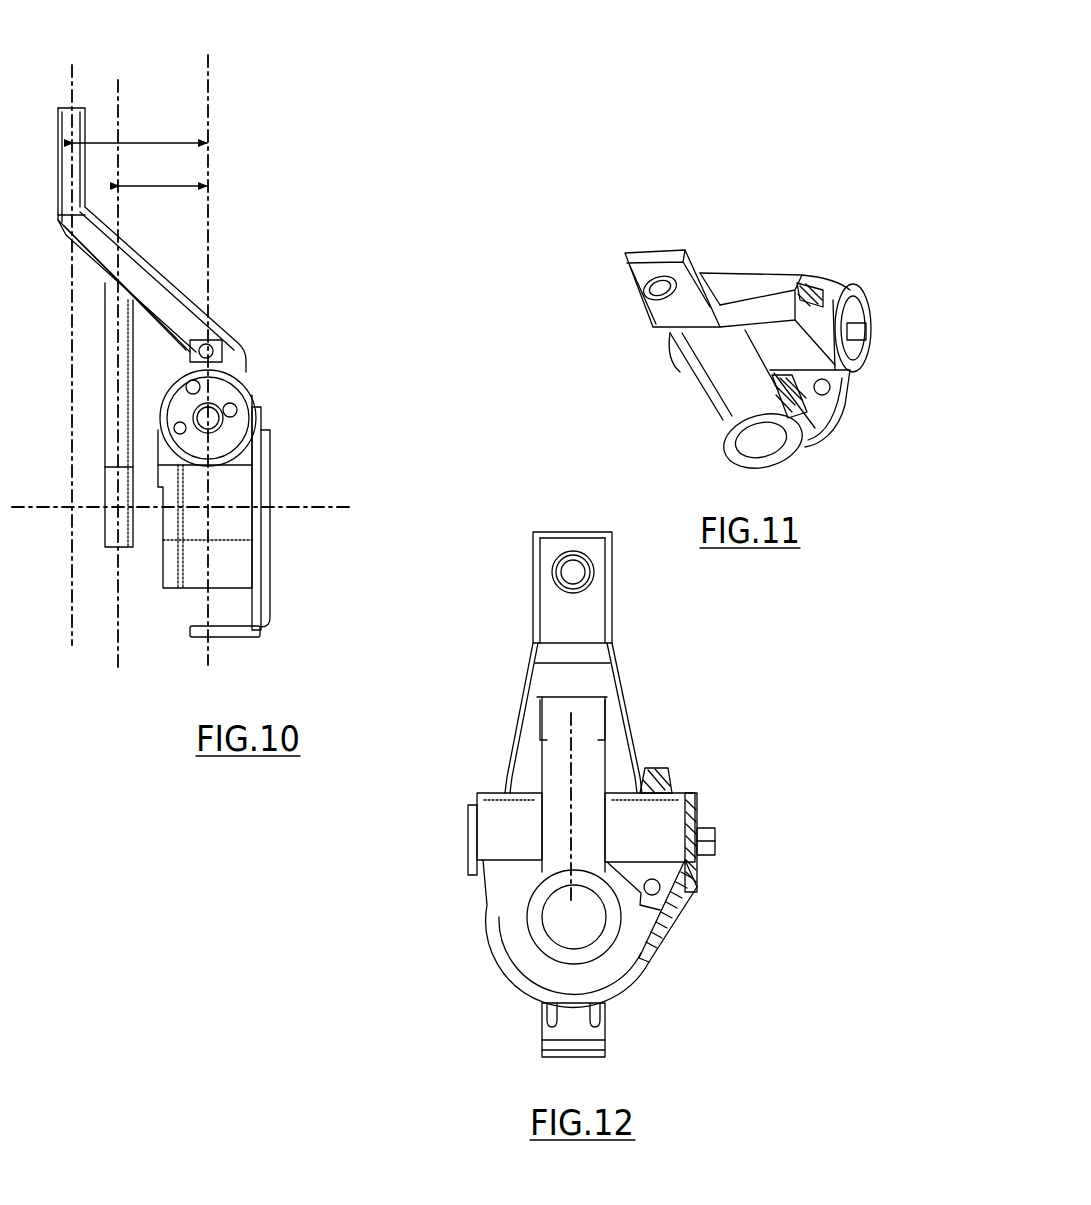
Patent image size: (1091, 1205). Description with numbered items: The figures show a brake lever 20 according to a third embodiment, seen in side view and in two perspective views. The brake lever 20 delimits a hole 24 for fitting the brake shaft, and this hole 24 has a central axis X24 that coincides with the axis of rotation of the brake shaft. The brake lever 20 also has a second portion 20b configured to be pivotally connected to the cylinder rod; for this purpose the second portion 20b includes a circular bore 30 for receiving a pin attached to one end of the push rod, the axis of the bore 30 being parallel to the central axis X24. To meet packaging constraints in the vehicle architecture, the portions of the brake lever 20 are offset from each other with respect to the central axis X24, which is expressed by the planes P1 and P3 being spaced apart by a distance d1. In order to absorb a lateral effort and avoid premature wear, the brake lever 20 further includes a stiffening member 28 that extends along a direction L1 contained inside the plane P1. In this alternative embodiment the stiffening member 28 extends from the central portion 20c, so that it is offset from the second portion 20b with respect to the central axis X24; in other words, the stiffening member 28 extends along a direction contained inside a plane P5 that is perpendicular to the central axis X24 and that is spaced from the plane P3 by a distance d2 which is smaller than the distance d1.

In FIG. 11, the brake lever 20 is at (797, 207).
In FIG. 11, the second portion 20b is at (640, 258).
In FIG. 10, the central portion 20c is at (160, 303).
In FIG. 12, the hole 24 is at (517, 937).
In FIG. 10, the stiffening member 28 is at (118, 530).
In FIG. 12, the stiffening member 28 is at (558, 835).
In FIG. 12, the circular bore 30 is at (573, 572).
In FIG. 12, the direction L1 is at (571, 760).
In FIG. 10, the central axis X24 is at (215, 506).
In FIG. 10, the plane P1 is at (69, 328).
In FIG. 10, the plane P3 is at (209, 338).
In FIG. 10, the plane P5 is at (111, 392).
In FIG. 10, the distance d1 is at (140, 124).
In FIG. 10, the distance d2 is at (163, 216).